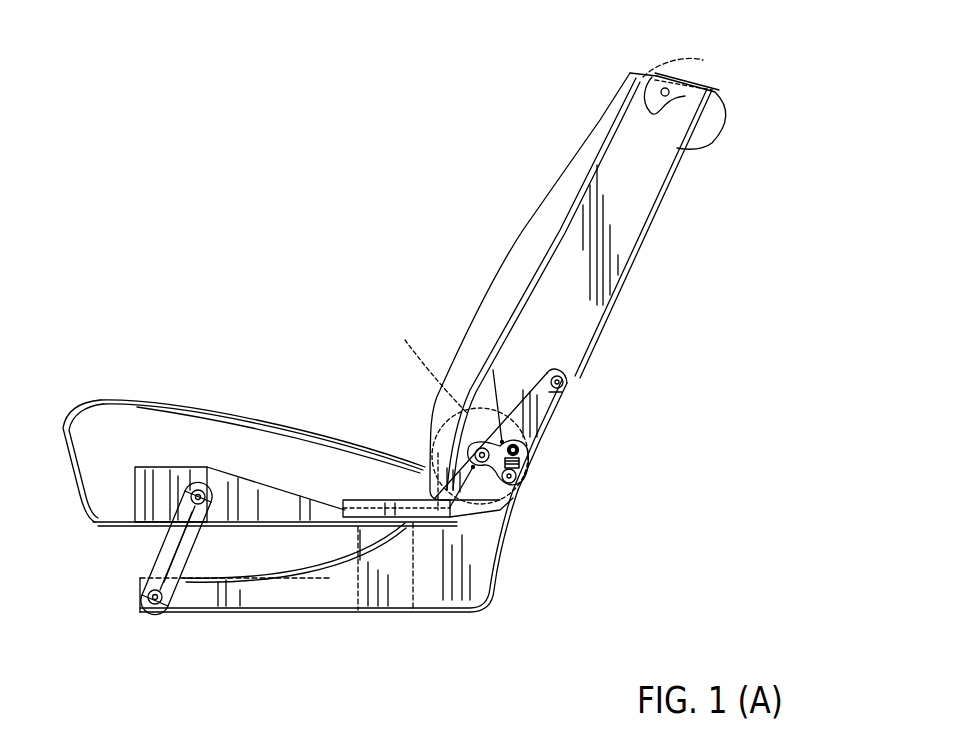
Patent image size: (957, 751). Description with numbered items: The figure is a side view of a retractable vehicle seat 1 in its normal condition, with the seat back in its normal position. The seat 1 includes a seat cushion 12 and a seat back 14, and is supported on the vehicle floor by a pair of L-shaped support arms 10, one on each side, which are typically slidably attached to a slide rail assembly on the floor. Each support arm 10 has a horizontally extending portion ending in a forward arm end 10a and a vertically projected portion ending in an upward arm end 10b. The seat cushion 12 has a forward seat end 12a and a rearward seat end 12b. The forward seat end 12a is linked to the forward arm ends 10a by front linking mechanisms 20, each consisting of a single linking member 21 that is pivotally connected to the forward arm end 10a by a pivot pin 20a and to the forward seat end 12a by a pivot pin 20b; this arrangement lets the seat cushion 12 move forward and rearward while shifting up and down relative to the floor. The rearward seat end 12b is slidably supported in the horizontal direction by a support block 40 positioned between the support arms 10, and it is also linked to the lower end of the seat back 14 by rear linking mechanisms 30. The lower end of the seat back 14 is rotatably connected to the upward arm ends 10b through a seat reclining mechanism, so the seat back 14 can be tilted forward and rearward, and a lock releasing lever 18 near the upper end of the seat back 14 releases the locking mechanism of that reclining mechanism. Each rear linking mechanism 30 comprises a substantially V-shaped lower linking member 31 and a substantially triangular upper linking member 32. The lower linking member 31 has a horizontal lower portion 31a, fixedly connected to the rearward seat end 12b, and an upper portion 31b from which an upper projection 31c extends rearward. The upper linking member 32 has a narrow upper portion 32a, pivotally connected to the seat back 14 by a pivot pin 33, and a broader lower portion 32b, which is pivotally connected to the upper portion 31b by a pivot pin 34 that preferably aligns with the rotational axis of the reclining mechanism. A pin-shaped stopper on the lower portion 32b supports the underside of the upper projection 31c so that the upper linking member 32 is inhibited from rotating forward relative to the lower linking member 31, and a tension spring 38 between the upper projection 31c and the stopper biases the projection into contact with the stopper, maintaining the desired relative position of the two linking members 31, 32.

The retractable vehicle seat 1 is at (305, 283).
The support arm 10 is at (468, 590).
The forward arm end 10a is at (198, 598).
The upward arm end 10b is at (455, 413).
The seat cushion 12 is at (202, 423).
The forward seat end 12a is at (138, 505).
The rearward seat end 12b is at (430, 530).
The seat back 14 is at (520, 255).
The lock releasing lever 18 is at (700, 90).
The front linking mechanism 20 is at (205, 543).
The pivot pin 20a is at (148, 600).
The pivot pin 20b is at (196, 492).
The linking member 21 is at (178, 549).
The rear linking mechanism 30 is at (428, 462).
The lower linking member 31 is at (455, 513).
The lower portion 31a is at (378, 510).
The upper portion 31b is at (523, 493).
The upper projection 31c is at (493, 370).
The upper linking member 32 is at (545, 418).
The upper portion 32a is at (549, 393).
The lower portion 32b is at (510, 443).
The pivot pin 33 is at (567, 378).
The pivot pin 34 is at (468, 430).
The tension spring 38 is at (527, 472).
The support block 40 is at (358, 546).